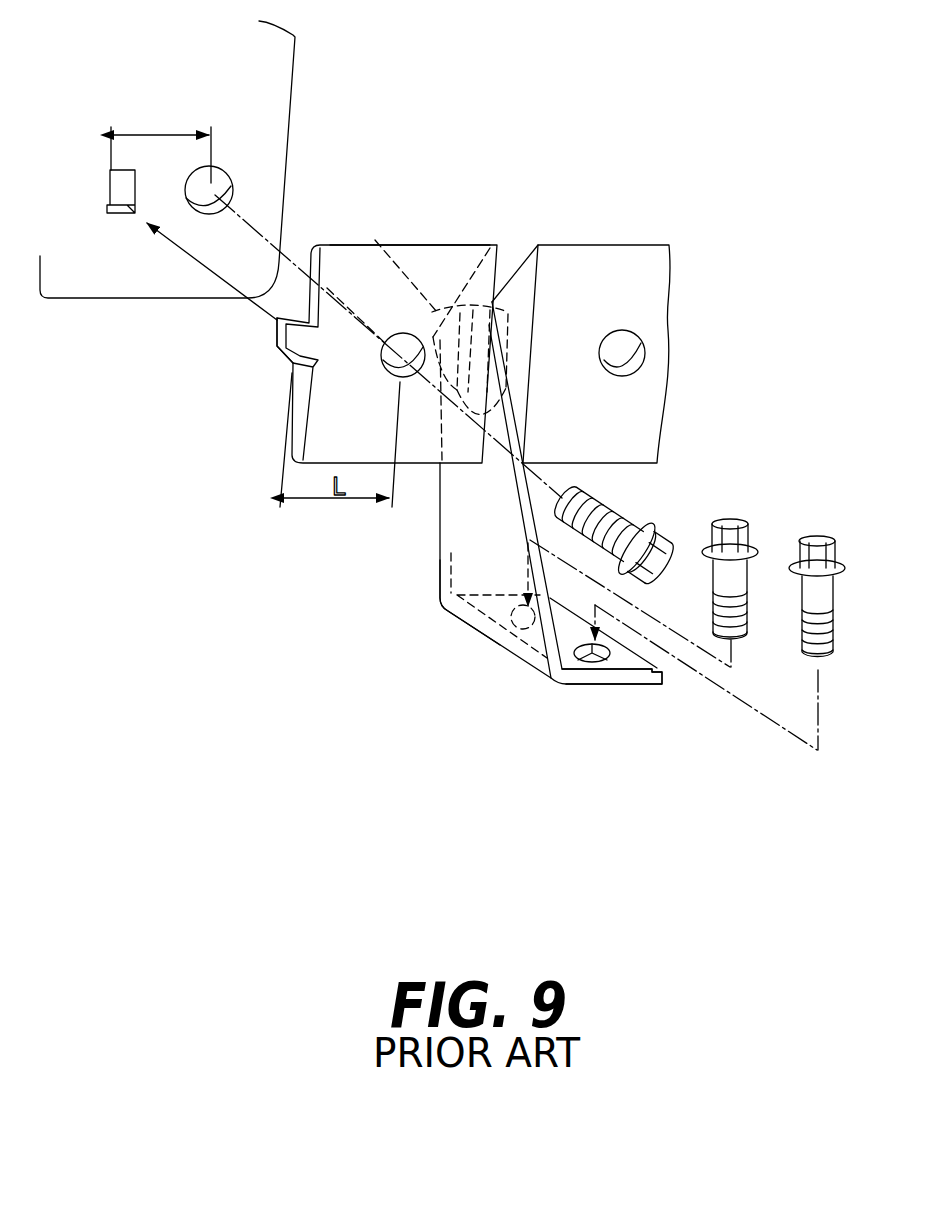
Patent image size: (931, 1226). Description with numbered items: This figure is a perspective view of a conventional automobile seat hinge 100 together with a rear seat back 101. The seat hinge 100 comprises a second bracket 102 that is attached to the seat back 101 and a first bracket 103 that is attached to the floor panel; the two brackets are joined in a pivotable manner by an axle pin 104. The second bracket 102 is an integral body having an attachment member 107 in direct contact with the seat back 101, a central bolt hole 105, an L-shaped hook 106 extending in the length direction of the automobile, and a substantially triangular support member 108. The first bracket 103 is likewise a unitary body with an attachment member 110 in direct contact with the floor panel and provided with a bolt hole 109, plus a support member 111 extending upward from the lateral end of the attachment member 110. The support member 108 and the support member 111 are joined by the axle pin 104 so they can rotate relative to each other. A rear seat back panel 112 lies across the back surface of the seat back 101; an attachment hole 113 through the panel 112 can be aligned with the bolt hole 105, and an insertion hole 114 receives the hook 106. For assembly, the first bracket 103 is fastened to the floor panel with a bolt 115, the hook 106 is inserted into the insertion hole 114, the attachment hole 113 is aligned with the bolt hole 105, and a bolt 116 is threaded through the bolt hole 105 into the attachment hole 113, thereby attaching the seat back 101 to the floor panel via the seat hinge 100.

The automobile seat hinge 100 is at (689, 228).
The seat back 101 is at (310, 86).
The second bracket 102 is at (556, 236).
The first bracket 103 is at (428, 597).
The axle pin 104 is at (375, 240).
The bolt hole 105 is at (394, 358).
The L-shaped hook 106 is at (285, 347).
The attachment member 107 is at (440, 268).
The support member 108 is at (518, 400).
The bolt hole 109 is at (601, 663).
The attachment member 110 is at (655, 678).
The support member 111 is at (473, 570).
The rear seat back panel 112 is at (93, 277).
The attachment hole 113 is at (215, 185).
The insertion hole 114 is at (117, 206).
The bolt 115 is at (817, 542).
The bolt 116 is at (672, 552).